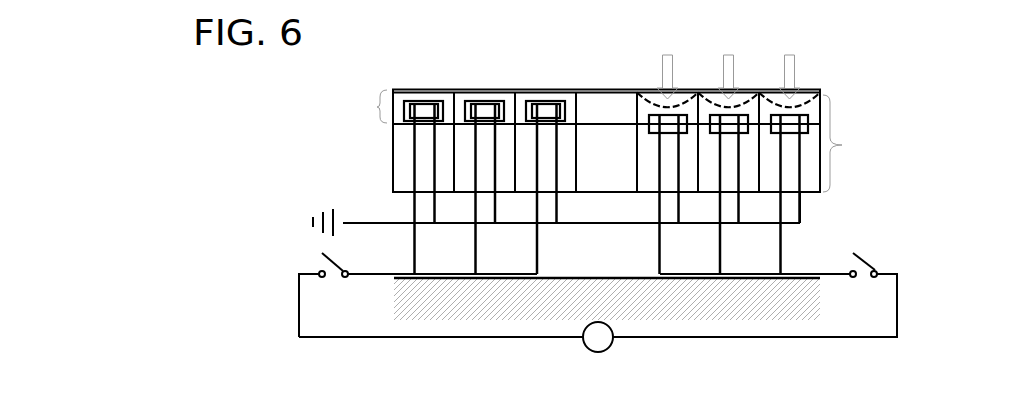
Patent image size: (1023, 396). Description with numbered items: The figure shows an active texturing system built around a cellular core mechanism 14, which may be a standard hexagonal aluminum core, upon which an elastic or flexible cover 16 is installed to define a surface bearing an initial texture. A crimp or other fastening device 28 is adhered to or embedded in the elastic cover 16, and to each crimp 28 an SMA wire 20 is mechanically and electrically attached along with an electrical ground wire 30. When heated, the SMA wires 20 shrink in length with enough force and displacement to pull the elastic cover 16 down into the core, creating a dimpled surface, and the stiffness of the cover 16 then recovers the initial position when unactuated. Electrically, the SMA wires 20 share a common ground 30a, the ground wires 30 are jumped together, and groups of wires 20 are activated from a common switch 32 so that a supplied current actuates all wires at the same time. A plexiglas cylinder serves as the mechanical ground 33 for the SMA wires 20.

The cellular core mechanism 14 is at (842, 145).
The elastic cover 16 is at (819, 91).
The SMA wire 20 is at (410, 163).
The crimp 28 is at (407, 108).
The electrical ground wire 30 is at (800, 202).
The common ground 30a is at (374, 222).
The common switch 32 is at (871, 263).
The mechanical ground 33 is at (815, 305).